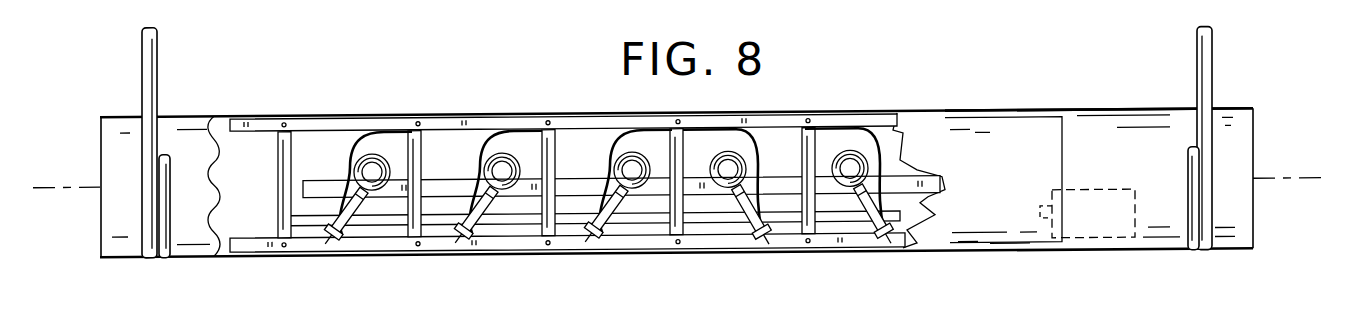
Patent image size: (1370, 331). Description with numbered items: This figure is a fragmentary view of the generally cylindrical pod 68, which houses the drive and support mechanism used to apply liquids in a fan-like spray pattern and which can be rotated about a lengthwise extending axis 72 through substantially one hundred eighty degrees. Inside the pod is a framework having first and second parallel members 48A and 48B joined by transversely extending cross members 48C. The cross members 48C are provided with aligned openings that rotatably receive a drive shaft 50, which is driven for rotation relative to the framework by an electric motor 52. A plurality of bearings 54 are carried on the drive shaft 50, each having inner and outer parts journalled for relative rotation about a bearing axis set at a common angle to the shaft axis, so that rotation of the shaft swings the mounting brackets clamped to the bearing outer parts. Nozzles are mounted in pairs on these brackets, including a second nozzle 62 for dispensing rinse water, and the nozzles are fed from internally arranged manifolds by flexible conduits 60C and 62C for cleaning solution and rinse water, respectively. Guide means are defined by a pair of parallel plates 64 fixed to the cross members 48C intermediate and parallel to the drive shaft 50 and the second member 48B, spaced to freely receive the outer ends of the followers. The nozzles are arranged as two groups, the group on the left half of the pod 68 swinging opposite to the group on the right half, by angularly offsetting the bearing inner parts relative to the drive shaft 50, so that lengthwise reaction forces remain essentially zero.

The first parallel member 48A is at (388, 260).
The second parallel member 48B is at (352, 130).
The cross members 48C is at (470, 187).
The drive shaft 50 is at (305, 226).
The electric motor 52 is at (1087, 263).
The bearings 54 is at (734, 242).
The flexible conduit 60C is at (575, 140).
The second nozzle 62 is at (347, 251).
The flexible conduit 62C is at (590, 160).
The parallel plates 64 is at (310, 182).
The pod 68 is at (1103, 118).
The lengthwise extending axis 72 is at (1302, 194).